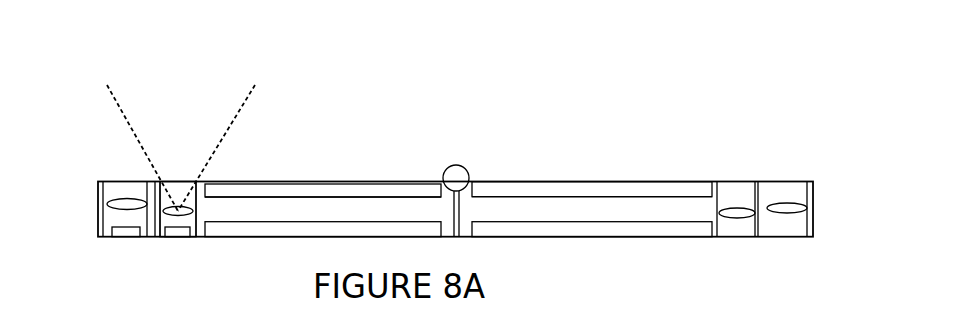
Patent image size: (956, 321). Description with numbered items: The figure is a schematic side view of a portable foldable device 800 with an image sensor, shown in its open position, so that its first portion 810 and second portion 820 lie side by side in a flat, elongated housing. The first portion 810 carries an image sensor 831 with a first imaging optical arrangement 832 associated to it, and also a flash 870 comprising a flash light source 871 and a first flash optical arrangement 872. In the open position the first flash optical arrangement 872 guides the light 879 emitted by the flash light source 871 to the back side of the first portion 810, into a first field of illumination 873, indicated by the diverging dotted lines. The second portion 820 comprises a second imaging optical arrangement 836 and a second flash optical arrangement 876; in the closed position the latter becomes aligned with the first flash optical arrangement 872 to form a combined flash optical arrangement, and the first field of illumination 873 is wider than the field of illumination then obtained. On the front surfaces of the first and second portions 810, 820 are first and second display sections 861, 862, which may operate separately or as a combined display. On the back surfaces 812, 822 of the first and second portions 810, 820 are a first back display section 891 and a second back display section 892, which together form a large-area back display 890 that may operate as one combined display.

The device 800 is at (716, 112).
The first portion 810 is at (202, 237).
The back surface 812 is at (301, 181).
The second portion 820 is at (464, 224).
The back surface 822 is at (655, 181).
The image sensor 831 is at (127, 233).
The first imaging optical arrangement 832 is at (108, 205).
The second imaging optical arrangement 836 is at (803, 210).
The first display section 861 is at (296, 226).
The second display section 862 is at (615, 227).
The flash 870 is at (195, 207).
The flash light source 871 is at (177, 233).
The first flash optical arrangement 872 is at (192, 211).
The first field of illumination 873 is at (248, 103).
The light 879 is at (216, 148).
The second flash optical arrangement 876 is at (743, 215).
The back display 890 is at (533, 118).
The first back display section 891 is at (355, 194).
The second back display section 892 is at (612, 192).